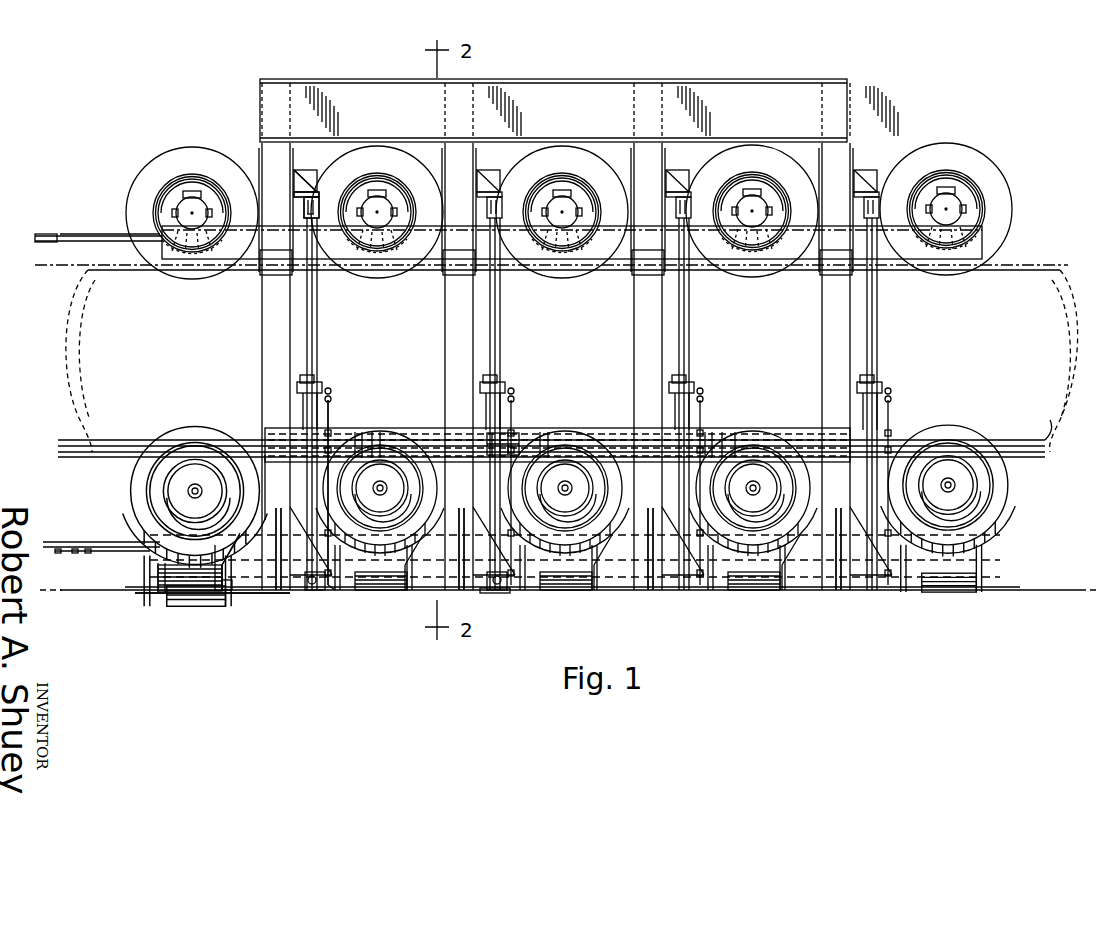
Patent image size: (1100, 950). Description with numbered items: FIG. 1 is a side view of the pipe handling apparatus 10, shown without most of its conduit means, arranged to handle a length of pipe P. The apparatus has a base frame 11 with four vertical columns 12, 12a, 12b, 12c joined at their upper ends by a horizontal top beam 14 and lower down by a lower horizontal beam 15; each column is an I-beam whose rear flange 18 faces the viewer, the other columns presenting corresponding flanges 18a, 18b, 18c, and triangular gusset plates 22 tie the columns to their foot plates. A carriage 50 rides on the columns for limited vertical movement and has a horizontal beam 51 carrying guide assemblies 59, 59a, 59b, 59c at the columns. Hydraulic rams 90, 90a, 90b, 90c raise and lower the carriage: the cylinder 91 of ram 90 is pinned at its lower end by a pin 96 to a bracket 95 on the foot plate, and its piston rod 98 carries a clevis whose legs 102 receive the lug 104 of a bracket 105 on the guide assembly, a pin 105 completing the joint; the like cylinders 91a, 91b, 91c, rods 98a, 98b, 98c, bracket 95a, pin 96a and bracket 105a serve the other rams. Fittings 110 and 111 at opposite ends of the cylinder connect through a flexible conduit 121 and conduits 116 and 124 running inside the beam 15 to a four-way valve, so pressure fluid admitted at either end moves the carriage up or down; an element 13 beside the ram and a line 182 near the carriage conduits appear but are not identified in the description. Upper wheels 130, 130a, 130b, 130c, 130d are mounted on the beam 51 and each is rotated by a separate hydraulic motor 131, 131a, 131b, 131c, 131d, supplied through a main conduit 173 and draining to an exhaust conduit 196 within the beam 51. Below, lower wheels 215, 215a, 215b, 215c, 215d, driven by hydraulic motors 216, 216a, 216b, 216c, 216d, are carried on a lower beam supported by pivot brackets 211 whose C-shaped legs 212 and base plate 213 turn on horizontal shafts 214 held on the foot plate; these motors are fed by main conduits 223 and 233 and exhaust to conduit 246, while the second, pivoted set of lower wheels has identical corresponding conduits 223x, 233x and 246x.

The pipe handling apparatus 10 is at (126, 124).
The base frame 11 is at (635, 604).
The vertical column 12 is at (269, 344).
The vertical column 12a is at (452, 340).
The vertical column 12b is at (642, 344).
The vertical column 12c is at (830, 344).
The control rod 13 is at (333, 415).
The horizontal top beam 14 is at (838, 102).
The lower horizontal beam 15 is at (804, 428).
The rear flange 18 is at (262, 312).
The upright column 18a is at (445, 312).
The upright column 18b is at (634, 312).
The upright column 18c is at (822, 312).
The gusset plate 22 is at (272, 527).
The carriage 50 is at (1012, 248).
The horizontal beam 51 is at (752, 262).
The guide assembly 59 is at (293, 151).
The guide assembly 59a is at (478, 151).
The guide assembly 59b is at (667, 151).
The guide assembly 59c is at (856, 151).
The hydraulic ram 90 is at (324, 377).
The hydraulic ram 90a is at (507, 377).
The hydraulic ram 90b is at (699, 377).
The hydraulic ram 90c is at (889, 377).
The cylinder 91 is at (297, 388).
The cylinder 91a is at (480, 388).
The cylinder 91b is at (670, 390).
The cylinder 91c is at (870, 395).
The bracket 95 is at (314, 596).
The bracket 95a is at (490, 593).
The pin 96 is at (292, 600).
The pin 96a is at (505, 596).
The piston rod 98 is at (314, 310).
The piston rod 98a is at (498, 310).
The piston rod 98b is at (688, 310).
The piston rod 98c is at (877, 306).
The clevis legs 102 is at (320, 212).
The downwardly extending lug 104 is at (294, 200).
The bracket 105 is at (304, 220).
The bracket 105a is at (300, 178).
The fitting 110 is at (330, 390).
The fitting 111 is at (330, 592).
The conduit 116 is at (66, 440).
The flexible conduit 121 is at (322, 492).
The conduit 124 is at (66, 457).
The wheel 130 is at (186, 152).
The wheel 130a is at (385, 132).
The wheel 130b is at (565, 132).
The wheel 130c is at (738, 152).
The wheel 130d is at (950, 132).
The hydraulic motor 131 is at (193, 204).
The hydraulic motor 131a is at (383, 204).
The hydraulic motor 131b is at (567, 204).
The hydraulic motor 131c is at (757, 204).
The hydraulic motor 131d is at (952, 200).
The main hydraulic fluid conduit 173 is at (38, 234).
The shaft 182 is at (60, 236).
The exhaust conduit 196 is at (98, 235).
The pivot bracket 211 is at (212, 596).
The C-shaped legs 212 is at (160, 575).
The base plate 213 is at (170, 593).
The horizontal shaft 214 is at (196, 591).
The lower wheel 215 is at (196, 420).
The lower wheel 215a is at (388, 432).
The lower wheel 215b is at (578, 432).
The lower wheel 215c is at (764, 432).
The lower wheel 215d is at (952, 426).
The hydraulic motor 216 is at (180, 496).
The hydraulic motor 216a is at (376, 494).
The hydraulic motor 216b is at (561, 494).
The hydraulic motor 216c is at (749, 494).
The hydraulic motor 216d is at (965, 480).
The main hydraulic fluid conduit 223 is at (116, 552).
The main hydraulic fluid conduit 223x is at (60, 553).
The main conduit 233 is at (122, 545).
The main conduit 233x is at (74, 542).
The exhaust conduit 246 is at (90, 553).
The exhaust conduit 246x is at (78, 553).
The paper roll P is at (72, 296).